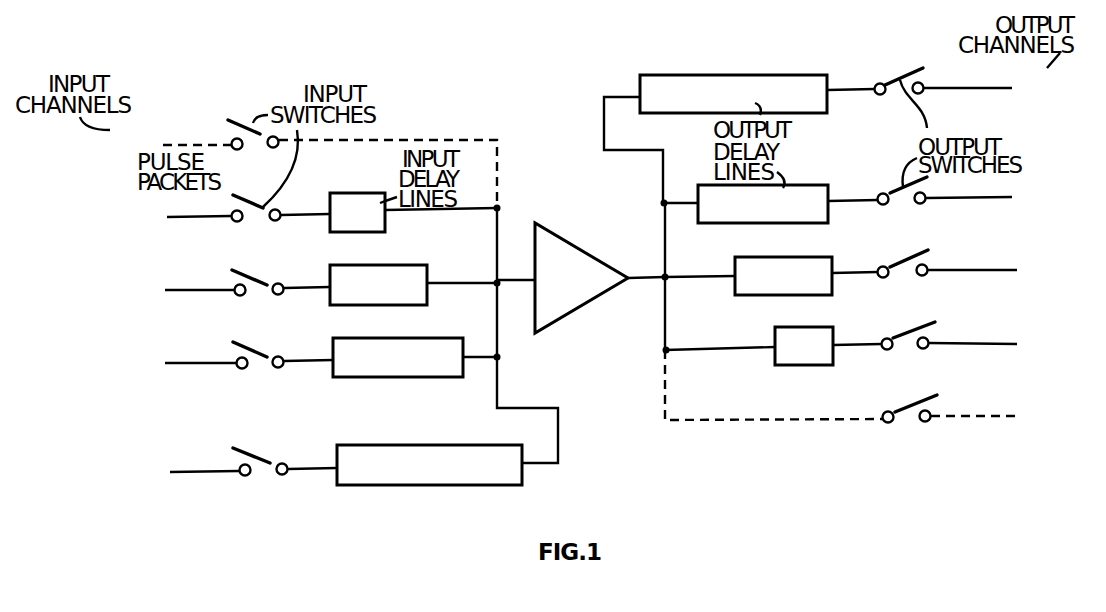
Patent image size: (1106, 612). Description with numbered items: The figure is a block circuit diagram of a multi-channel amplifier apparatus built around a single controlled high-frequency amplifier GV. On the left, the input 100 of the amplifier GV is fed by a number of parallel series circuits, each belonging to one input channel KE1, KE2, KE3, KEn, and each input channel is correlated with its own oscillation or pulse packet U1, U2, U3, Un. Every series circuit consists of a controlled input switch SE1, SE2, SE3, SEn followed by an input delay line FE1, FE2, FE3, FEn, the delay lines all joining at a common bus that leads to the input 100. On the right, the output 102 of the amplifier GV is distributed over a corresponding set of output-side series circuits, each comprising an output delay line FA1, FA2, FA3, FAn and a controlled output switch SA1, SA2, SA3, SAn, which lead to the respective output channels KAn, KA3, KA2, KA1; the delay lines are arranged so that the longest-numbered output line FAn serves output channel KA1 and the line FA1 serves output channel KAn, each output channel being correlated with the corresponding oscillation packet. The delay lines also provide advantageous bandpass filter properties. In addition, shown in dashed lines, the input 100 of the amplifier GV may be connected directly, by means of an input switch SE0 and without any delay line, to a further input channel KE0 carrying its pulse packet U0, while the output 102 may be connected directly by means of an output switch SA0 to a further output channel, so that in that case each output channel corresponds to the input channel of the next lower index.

The input 100 is at (527, 278).
The output 102 is at (633, 275).
The controlled high-frequency amplifier GV is at (575, 295).
The input delay line FE1 is at (363, 226).
The input delay line FE2 is at (372, 300).
The input delay line FE3 is at (390, 374).
The input delay line FEn is at (397, 482).
The output delay line FAn is at (722, 109).
The output delay line FA3 is at (760, 219).
The output delay line FA2 is at (803, 290).
The output delay line FA1 is at (813, 361).
The input switch SE0 is at (253, 149).
The controlled input switch SE1 is at (256, 222).
The controlled input switch SE2 is at (258, 296).
The controlled input switch SE3 is at (258, 369).
The controlled input switch SEn is at (260, 477).
The controlled output switch SAn is at (899, 100).
The controlled output switch SA3 is at (903, 209).
The controlled output switch SA2 is at (903, 281).
The controlled output switch SA1 is at (909, 353).
The output switch SA0 is at (910, 427).
The input channel KE0 is at (172, 132).
The input channel KE1 is at (174, 204).
The input channel KE2 is at (176, 277).
The input channel KE3 is at (177, 350).
The input channel KEn is at (181, 456).
The output channel KA1 is at (983, 72).
The output channel KA2 is at (996, 189).
The output channel KA3 is at (990, 254).
The output channel KAn is at (992, 329).
The pulse packet U0 is at (178, 152).
The pulse packet U1 is at (177, 190).
The pulse packet U2 is at (197, 275).
The pulse packet U3 is at (191, 347).
The pulse packet Un is at (187, 454).